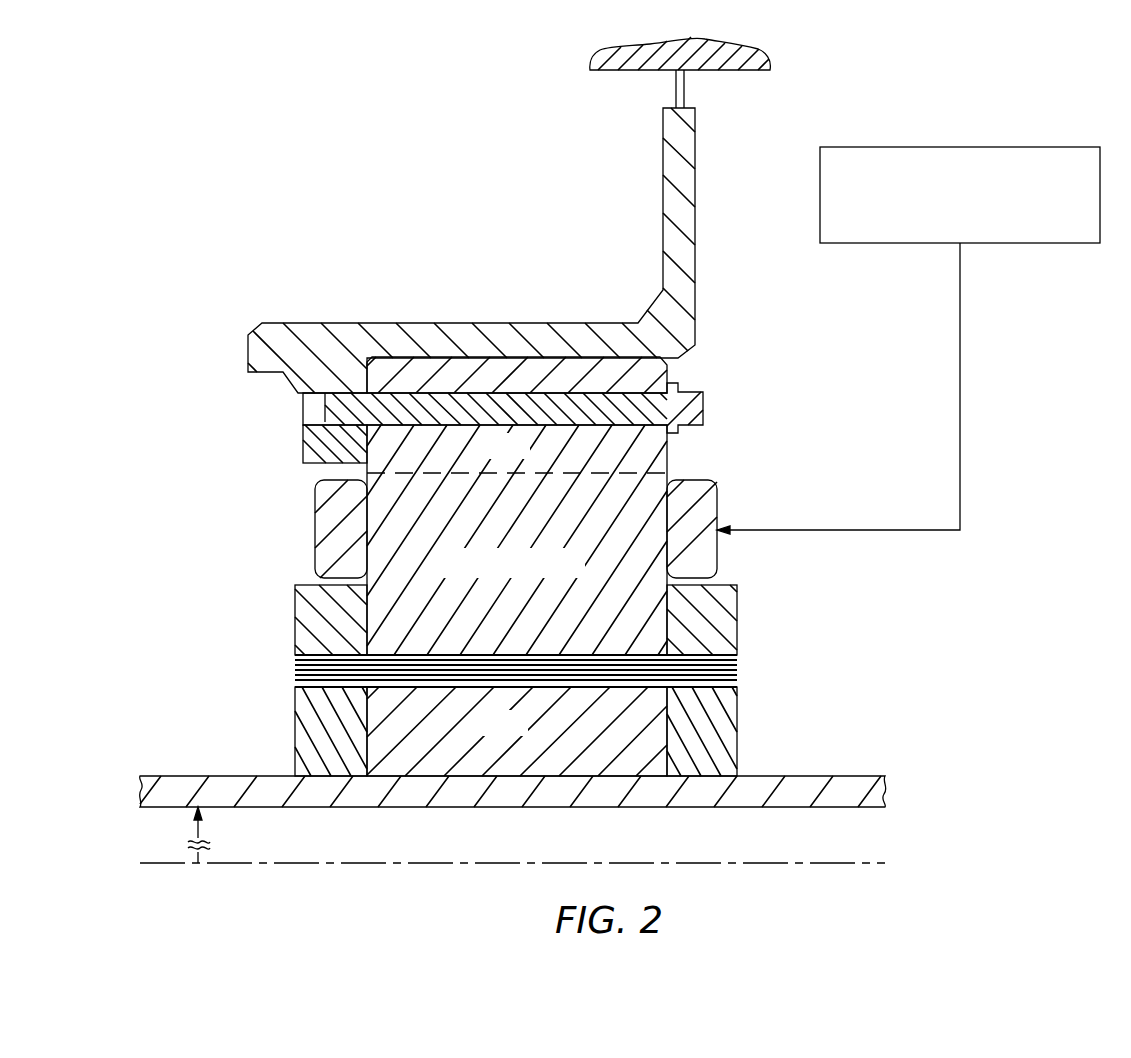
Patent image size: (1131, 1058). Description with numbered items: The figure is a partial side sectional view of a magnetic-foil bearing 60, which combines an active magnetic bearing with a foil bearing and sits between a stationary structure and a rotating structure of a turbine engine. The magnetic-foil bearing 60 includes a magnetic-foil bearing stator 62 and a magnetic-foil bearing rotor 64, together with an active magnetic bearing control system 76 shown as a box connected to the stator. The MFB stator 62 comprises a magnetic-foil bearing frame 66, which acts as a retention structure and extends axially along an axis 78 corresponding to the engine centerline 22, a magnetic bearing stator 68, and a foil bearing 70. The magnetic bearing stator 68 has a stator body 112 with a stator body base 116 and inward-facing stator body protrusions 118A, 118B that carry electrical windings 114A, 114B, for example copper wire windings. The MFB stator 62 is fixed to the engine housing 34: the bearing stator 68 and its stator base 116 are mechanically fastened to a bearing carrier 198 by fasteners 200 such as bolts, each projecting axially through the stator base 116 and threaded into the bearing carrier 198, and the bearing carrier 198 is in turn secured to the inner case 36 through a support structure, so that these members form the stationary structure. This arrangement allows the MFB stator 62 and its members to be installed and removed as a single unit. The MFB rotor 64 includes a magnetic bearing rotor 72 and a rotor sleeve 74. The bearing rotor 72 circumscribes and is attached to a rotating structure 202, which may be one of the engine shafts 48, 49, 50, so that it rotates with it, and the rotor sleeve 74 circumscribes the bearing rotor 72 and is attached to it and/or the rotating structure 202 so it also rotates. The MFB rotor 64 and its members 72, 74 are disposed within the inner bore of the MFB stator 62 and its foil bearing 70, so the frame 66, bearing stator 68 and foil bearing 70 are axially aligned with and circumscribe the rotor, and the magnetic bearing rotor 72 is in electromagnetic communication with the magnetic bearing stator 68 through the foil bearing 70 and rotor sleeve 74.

The engine housing 34 is at (743, 42).
The inner case 36 is at (772, 50).
The bearing carrier 198 is at (695, 205).
The active magnetic bearing control system 76 is at (1037, 243).
The stator body 112 is at (519, 250).
The fastener 200 is at (705, 400).
The magnetic-foil bearing 60 is at (253, 461).
The stator body base 116 is at (517, 540).
The magnetic bearing stator 68 is at (690, 465).
The magnetic-foil bearing stator 62 is at (255, 530).
The stator body protrusion 118A is at (517, 540).
The stator body protrusion 118B is at (527, 457).
The electrical winding 114A is at (783, 530).
The electrical winding 114B is at (722, 550).
The magnetic-foil bearing frame 66 is at (275, 620).
The foil bearing 70 is at (569, 659).
The rotor sleeve 74 is at (760, 660).
The magnetic-foil bearing rotor 64 is at (277, 725).
The magnetic bearing rotor 72 is at (525, 736).
The rotating structure 202 is at (571, 798).
The engine shaft 48 is at (571, 798).
The engine shaft 49 is at (571, 798).
The engine shaft 50 is at (905, 780).
The centerline 22 is at (521, 882).
The axis 78 is at (800, 863).